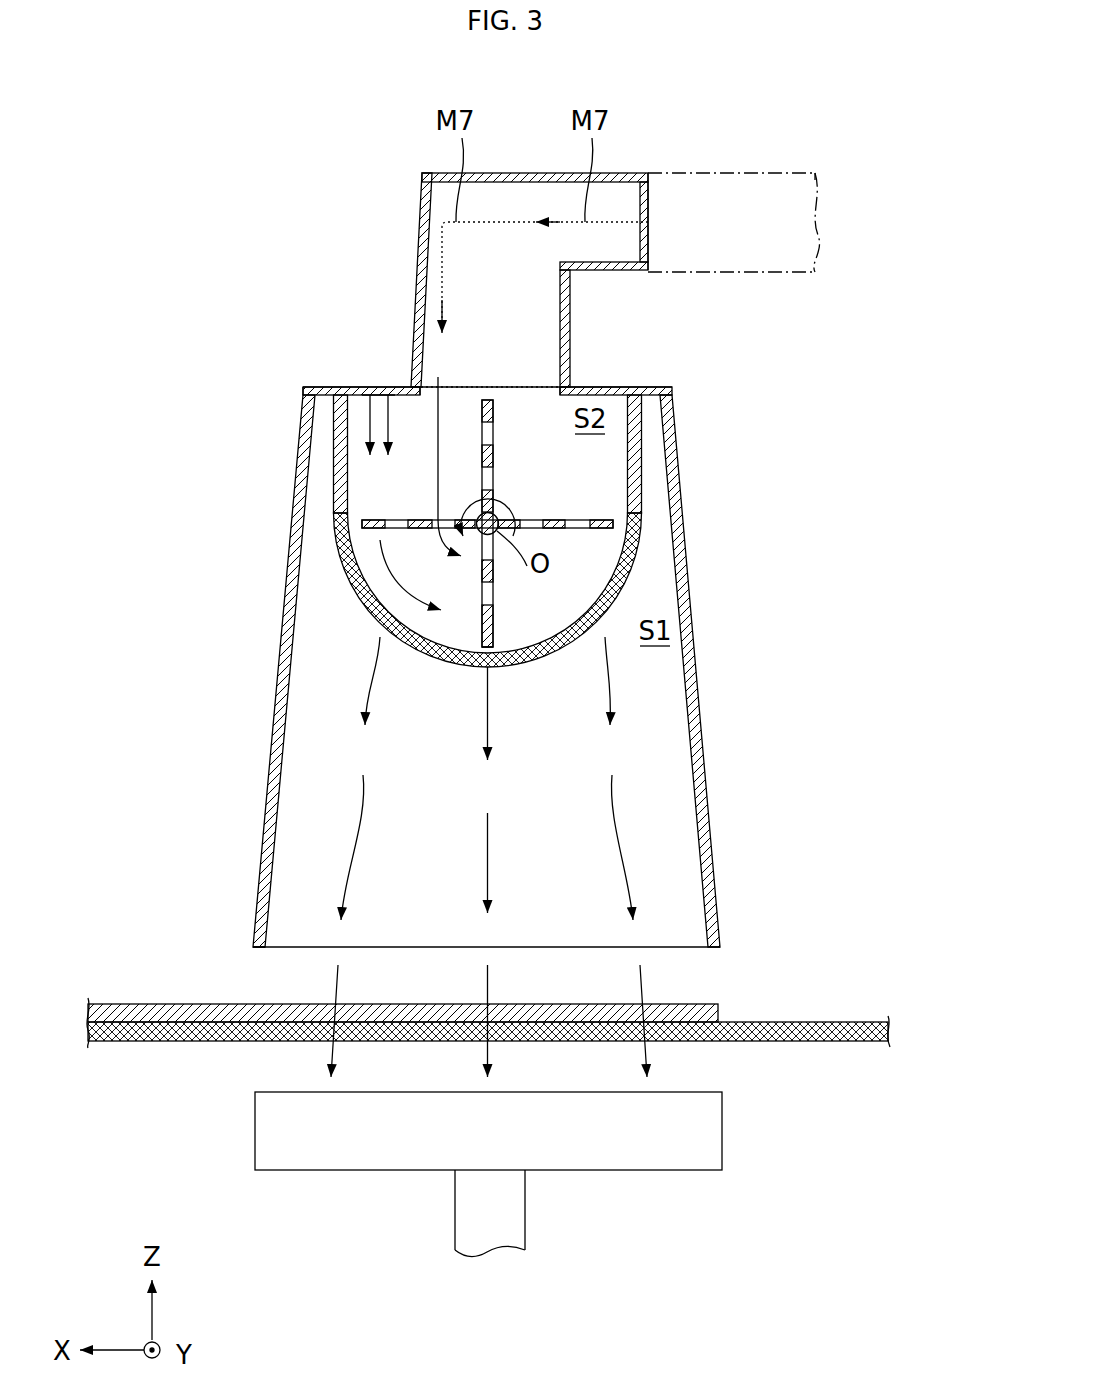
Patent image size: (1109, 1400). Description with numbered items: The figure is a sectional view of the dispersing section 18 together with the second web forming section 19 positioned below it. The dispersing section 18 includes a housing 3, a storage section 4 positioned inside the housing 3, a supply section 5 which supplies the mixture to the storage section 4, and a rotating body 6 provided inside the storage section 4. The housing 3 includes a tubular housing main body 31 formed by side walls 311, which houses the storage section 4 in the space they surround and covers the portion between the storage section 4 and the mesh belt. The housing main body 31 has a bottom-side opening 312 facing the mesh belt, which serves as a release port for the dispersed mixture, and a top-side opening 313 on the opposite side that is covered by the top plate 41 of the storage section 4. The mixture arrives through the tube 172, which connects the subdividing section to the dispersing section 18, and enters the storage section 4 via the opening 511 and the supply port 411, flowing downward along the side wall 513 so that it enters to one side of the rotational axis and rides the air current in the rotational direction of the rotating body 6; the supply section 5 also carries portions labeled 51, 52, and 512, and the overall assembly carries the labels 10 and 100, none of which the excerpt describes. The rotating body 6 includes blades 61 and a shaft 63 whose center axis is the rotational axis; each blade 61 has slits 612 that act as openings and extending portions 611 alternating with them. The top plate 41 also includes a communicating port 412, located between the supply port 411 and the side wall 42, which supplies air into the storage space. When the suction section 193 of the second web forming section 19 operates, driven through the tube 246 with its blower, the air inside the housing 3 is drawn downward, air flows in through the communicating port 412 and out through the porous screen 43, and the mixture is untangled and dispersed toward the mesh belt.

The housing 3 is at (515, 639).
The housing main body 31 is at (515, 639).
The side walls 311 is at (280, 686).
The bottom-side opening 312 is at (690, 947).
The top-side opening 313 is at (655, 388).
The storage section 4 is at (484, 336).
The top plate 41 is at (638, 385).
The supply port 411 is at (542, 385).
The communicating port 412 is at (370, 385).
The side wall 42 is at (333, 431).
The porous screen 43 is at (338, 545).
The supply section 5 is at (484, 236).
The duct body 51 is at (474, 272).
The opening 511 is at (407, 383).
The duct inner wall 512 is at (570, 347).
The side wall 513 is at (412, 228).
The connecting pipe 52 is at (628, 172).
The rotating body 6 is at (562, 558).
The blades 61 is at (547, 558).
The extending portions 611 is at (486, 650).
The slits 612 is at (478, 612).
The shaft 63 is at (493, 535).
The tube 172 is at (758, 168).
The dispersing section 18 is at (278, 99).
The modeling unit 10 is at (178, 219).
The three-dimensional modeling apparatus 100 is at (895, 272).
The second web forming section 19 is at (558, 1186).
The suction section 193 is at (723, 1128).
The tube 246 is at (525, 1212).